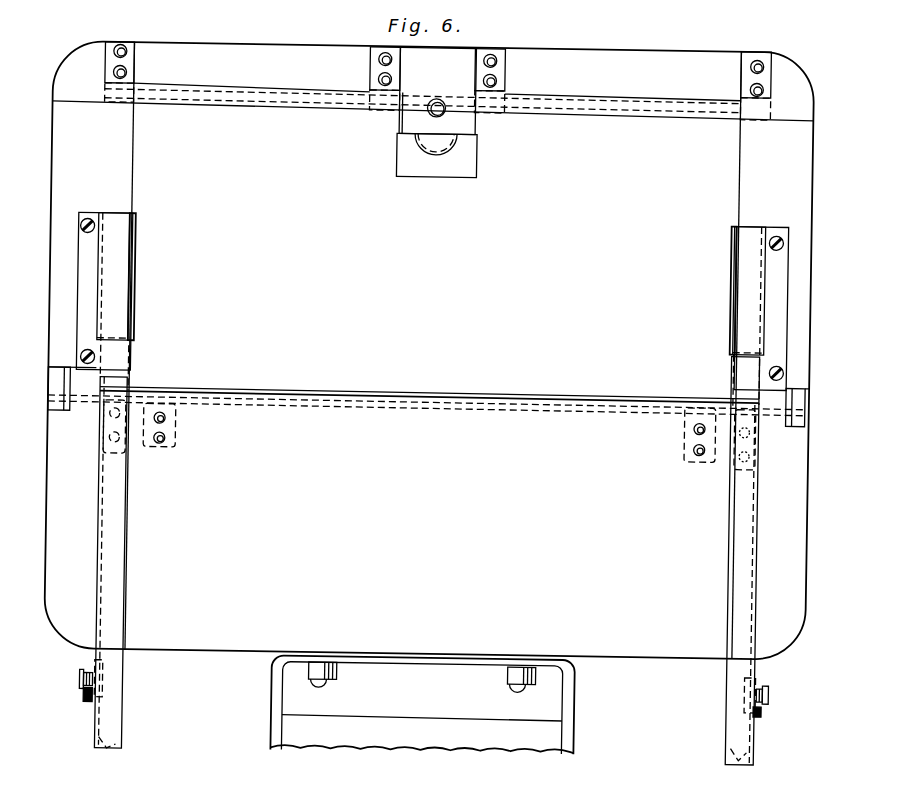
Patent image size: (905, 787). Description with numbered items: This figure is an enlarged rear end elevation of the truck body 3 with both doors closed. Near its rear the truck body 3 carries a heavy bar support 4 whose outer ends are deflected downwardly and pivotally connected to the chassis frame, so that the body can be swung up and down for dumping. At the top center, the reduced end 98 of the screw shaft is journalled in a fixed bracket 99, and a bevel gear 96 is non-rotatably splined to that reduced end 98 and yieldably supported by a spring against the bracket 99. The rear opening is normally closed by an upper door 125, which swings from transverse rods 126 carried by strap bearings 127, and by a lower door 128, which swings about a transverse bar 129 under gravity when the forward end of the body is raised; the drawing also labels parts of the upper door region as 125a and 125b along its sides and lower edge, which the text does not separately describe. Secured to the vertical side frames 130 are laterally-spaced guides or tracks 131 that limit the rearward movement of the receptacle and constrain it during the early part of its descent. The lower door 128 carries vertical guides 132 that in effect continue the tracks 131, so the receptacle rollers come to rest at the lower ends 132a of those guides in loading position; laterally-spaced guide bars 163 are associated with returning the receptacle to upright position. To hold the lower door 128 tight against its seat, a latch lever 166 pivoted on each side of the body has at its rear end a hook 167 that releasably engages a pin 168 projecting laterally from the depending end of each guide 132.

The truck body 3 is at (272, 47).
The heavy bar support 4 is at (570, 693).
The bevel gear 96 is at (433, 146).
The reduced end of screw shaft 98 is at (432, 104).
The fixed bracket 99 is at (408, 122).
The upper door 125 is at (432, 304).
The side hinge plate 125a is at (135, 237).
The hinge rail 125b is at (105, 387).
The transverse rods 126 is at (237, 97).
The strap bearings 127 is at (123, 67).
The lower door 128 is at (420, 558).
The transverse bar 129 is at (604, 407).
The vertical side frames 130 is at (435, 350).
The guides or tracks 131 is at (117, 302).
The vertical guides or tracks 132 is at (121, 595).
The lower ends of guides 132a is at (121, 752).
The guide bars 163 is at (129, 362).
The latch lever 166 is at (93, 706).
The hook 167 is at (94, 675).
The pin 168 is at (84, 688).